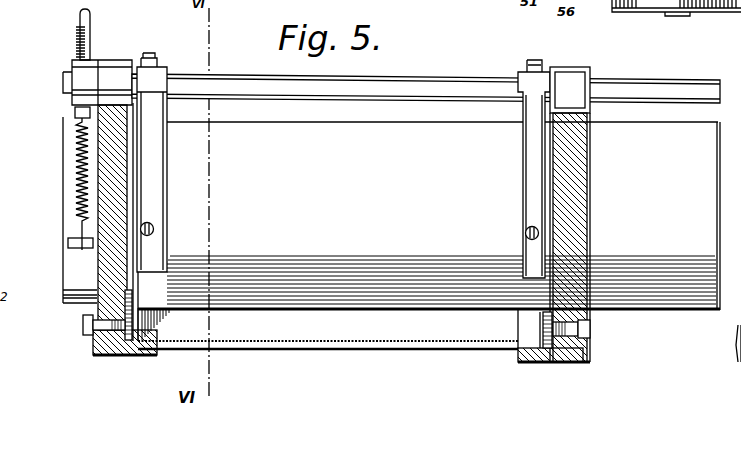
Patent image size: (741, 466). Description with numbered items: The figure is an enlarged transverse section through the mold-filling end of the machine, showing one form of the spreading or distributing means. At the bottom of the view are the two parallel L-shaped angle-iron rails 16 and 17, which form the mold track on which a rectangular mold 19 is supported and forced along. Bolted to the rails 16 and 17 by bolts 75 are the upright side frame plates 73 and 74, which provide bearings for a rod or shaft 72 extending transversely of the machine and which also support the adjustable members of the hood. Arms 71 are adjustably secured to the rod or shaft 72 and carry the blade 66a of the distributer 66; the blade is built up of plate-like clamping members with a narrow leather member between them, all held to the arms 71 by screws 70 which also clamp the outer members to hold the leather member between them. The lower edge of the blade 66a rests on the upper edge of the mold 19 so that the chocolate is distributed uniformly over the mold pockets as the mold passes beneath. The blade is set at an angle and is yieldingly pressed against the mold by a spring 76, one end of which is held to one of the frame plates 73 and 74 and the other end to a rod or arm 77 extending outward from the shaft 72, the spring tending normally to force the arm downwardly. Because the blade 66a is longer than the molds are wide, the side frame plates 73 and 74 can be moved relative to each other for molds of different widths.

The rail 16 is at (540, 362).
The rail 17 is at (128, 356).
The mold 19 is at (455, 350).
The distributer 66 is at (652, 300).
The blade 66a is at (442, 156).
The screw 70 is at (155, 229).
The arm 71 is at (156, 162).
The rod or shaft 72 is at (190, 68).
The frame plate 73 is at (590, 145).
The frame plate 74 is at (104, 152).
The bolt 75 is at (82, 321).
The spring 76 is at (78, 193).
The rod or arm 77 is at (92, 27).